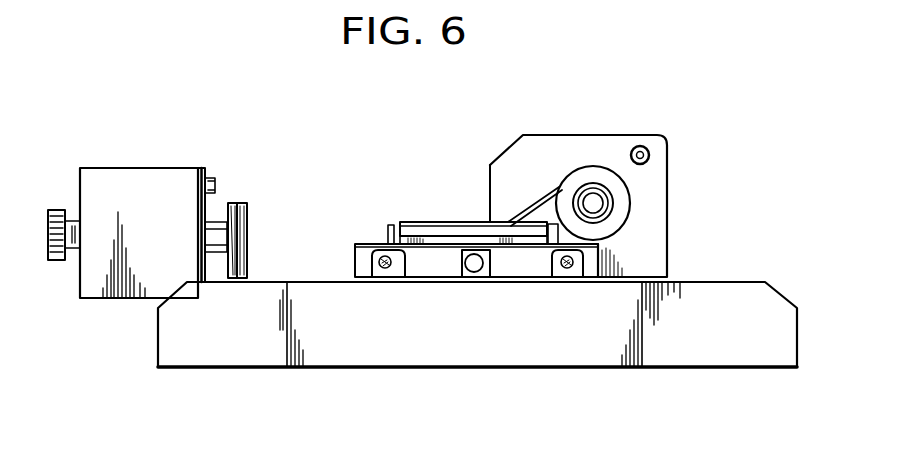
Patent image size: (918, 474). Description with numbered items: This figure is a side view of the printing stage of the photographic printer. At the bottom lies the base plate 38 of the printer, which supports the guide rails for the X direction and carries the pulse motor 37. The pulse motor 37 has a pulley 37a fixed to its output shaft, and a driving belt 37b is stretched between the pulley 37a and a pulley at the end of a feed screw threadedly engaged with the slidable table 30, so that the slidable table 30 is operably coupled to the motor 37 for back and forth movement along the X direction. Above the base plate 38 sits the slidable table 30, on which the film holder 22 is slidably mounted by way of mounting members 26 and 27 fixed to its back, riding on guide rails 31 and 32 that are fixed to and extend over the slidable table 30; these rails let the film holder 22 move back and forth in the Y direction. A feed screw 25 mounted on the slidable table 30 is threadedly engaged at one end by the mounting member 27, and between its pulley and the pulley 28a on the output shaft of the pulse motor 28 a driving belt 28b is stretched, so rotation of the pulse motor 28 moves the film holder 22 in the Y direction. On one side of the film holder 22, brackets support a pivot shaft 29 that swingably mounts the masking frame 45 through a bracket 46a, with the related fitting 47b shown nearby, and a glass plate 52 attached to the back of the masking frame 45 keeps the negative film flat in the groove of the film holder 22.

The film holder 22 is at (517, 271).
The feed screw 25 is at (474, 275).
The mounting member 26 is at (396, 276).
The mounting member 27 is at (580, 276).
The pulse motor 28 is at (632, 135).
The pulley 28a is at (593, 175).
The driving belt 28b is at (530, 212).
The pivot shaft 29 is at (549, 220).
The slidable table 30 is at (490, 276).
The guide rail 31 is at (385, 270).
The guide rail 32 is at (567, 270).
The pulse motor 37 is at (143, 176).
The pulley 37a is at (232, 205).
The driving belt 37b is at (242, 205).
The base plate 38 is at (692, 356).
The masking frame 45 is at (445, 228).
The bracket 46a is at (605, 231).
The post 47b is at (392, 225).
The glass plate 52 is at (432, 247).